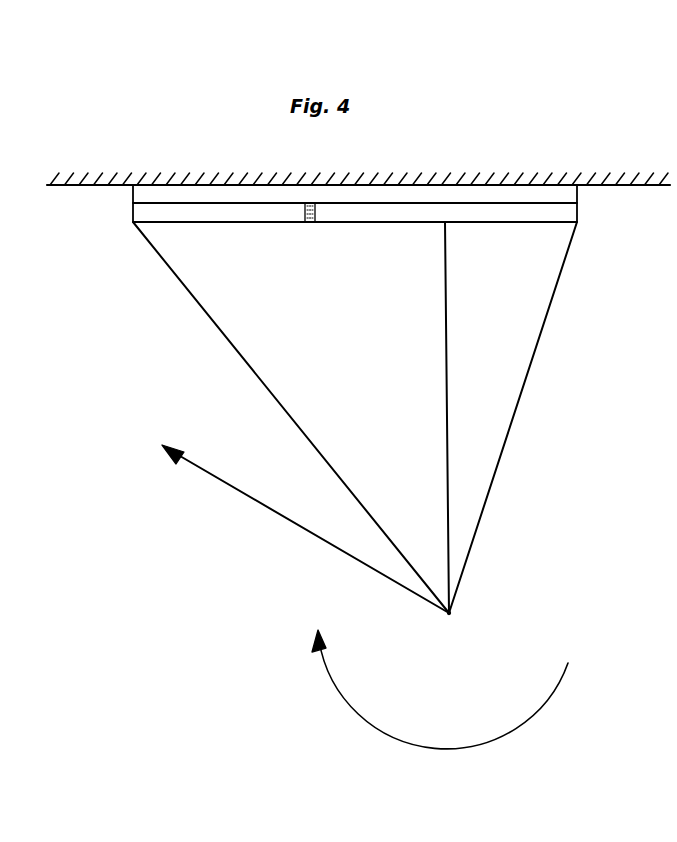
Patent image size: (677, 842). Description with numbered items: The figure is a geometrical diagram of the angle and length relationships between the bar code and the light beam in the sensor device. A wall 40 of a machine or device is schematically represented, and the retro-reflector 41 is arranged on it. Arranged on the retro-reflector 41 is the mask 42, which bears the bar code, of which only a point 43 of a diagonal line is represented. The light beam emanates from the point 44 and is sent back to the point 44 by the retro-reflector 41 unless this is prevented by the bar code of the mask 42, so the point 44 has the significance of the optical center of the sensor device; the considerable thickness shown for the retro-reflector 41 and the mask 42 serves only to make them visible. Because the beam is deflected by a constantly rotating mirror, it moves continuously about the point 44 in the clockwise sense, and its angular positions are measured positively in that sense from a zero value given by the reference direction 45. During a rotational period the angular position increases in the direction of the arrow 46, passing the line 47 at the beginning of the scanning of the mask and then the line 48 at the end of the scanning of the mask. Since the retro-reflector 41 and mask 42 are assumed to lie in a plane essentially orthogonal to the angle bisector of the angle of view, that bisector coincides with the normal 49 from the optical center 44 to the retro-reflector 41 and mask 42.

The wall 40 is at (638, 184).
The retro-reflector 41 is at (131, 197).
The mask 42 is at (131, 216).
The point of a diagonal line 43 is at (308, 222).
The point / optical center 44 is at (455, 612).
The reference direction 45 is at (231, 491).
The arrow 46 is at (390, 739).
The line 47 is at (211, 319).
The line 48 is at (555, 292).
The normal 49 is at (447, 311).